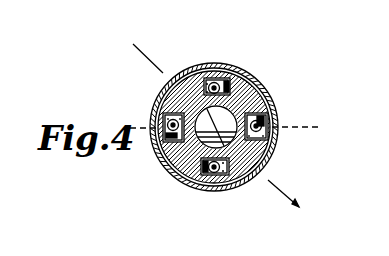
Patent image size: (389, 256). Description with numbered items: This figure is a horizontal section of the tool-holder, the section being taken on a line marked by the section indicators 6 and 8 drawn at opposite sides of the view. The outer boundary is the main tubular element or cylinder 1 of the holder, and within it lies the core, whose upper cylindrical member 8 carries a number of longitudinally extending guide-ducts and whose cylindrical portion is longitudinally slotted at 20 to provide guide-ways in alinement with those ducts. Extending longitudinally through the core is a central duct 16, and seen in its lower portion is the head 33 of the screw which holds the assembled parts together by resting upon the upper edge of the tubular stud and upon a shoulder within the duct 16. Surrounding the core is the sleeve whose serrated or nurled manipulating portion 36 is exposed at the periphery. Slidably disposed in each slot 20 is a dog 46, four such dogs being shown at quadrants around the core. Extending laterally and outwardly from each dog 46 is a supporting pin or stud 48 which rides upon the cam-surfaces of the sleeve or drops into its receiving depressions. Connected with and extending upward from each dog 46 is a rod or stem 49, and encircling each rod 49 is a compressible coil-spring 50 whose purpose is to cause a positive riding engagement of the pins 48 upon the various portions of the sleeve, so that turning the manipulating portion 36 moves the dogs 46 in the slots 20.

The main tubular element or cylinder 1 is at (266, 92).
The section line 6 is at (225, 129).
The upper cylindrical member 8 is at (213, 128).
The central duct 16 is at (265, 100).
The slots 20 is at (229, 78).
The head of screw 33 is at (236, 78).
The serrated or nurled manipulating portion 36 is at (262, 96).
The dog 46 is at (207, 78).
The supporting pins or studs 48 is at (163, 140).
The rods or stems 49 is at (222, 76).
The compressible coil-springs 50 is at (199, 81).